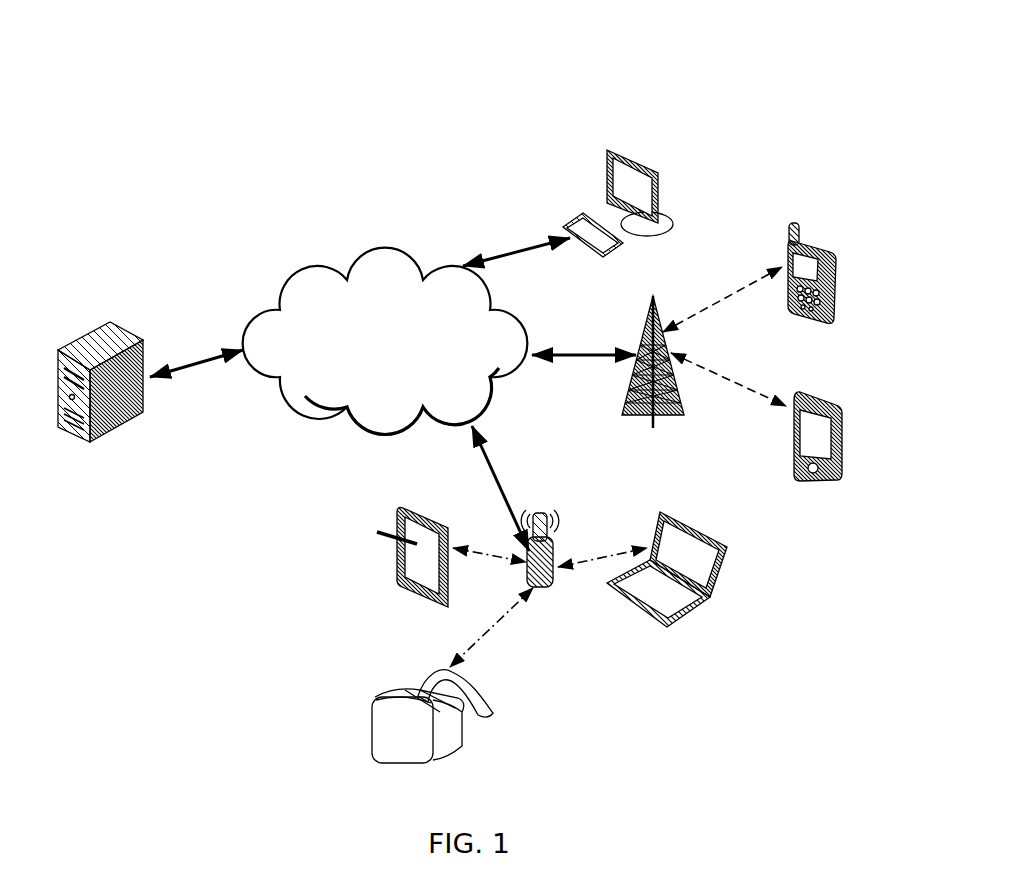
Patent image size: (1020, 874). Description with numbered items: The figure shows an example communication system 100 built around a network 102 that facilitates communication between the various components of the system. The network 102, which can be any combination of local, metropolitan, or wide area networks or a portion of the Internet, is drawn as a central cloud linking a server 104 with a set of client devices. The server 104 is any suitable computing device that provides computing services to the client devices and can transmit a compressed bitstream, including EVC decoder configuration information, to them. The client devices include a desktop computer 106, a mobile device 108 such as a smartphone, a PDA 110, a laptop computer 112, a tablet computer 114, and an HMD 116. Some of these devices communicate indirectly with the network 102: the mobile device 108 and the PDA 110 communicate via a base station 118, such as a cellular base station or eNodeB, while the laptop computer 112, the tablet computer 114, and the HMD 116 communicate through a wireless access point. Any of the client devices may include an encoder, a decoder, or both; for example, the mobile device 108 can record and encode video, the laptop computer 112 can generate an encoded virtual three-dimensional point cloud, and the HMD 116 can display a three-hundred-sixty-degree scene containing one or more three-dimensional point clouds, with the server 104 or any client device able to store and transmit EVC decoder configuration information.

The communication system 100 is at (795, 106).
The network 102 is at (385, 341).
The server 104 is at (85, 341).
The desktop computer 106 is at (607, 167).
The mobile device 108 is at (835, 263).
The PDA 110 is at (836, 400).
The laptop computer 112 is at (729, 560).
The tablet computer 114 is at (403, 510).
The HMD 116 is at (680, 394).
The base station 118 is at (558, 518).